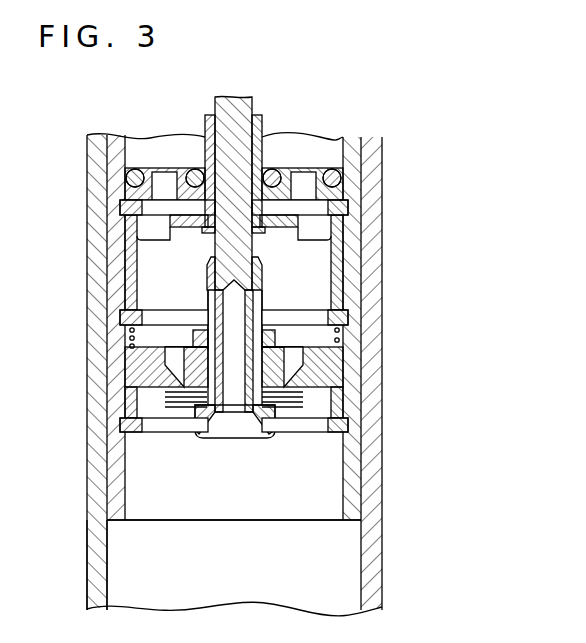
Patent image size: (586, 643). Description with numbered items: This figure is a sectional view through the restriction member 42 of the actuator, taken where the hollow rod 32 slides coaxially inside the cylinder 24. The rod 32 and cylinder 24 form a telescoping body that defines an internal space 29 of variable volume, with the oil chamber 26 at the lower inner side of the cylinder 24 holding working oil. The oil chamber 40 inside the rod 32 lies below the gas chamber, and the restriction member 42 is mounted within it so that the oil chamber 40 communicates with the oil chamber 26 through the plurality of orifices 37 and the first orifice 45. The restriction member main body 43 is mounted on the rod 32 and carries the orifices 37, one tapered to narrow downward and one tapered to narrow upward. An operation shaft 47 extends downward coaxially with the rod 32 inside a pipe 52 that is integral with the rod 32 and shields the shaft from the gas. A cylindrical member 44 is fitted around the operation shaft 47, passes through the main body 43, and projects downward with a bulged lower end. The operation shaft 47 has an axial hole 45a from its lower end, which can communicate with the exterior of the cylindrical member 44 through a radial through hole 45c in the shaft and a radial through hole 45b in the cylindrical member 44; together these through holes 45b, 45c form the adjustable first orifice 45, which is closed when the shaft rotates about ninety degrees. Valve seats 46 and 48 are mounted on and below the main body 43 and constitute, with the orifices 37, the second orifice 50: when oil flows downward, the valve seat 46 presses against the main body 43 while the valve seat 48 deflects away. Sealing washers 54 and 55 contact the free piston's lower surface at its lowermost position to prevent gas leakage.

The cylinder 24 is at (97, 558).
The oil chamber 26 is at (123, 585).
The internal space 29 is at (345, 560).
The hollow rod 32 is at (110, 373).
The orifices 37 is at (153, 425).
The oil chamber 40 is at (135, 145).
The restriction member 42 is at (322, 277).
The restriction member main body 43 is at (330, 371).
The cylindrical member 44 is at (256, 424).
The first orifice 45 is at (235, 373).
The axial hole 45a is at (210, 440).
The through hole 45b is at (272, 297).
The through hole 45c is at (212, 300).
The valve seat 46 is at (172, 345).
The operation shaft 47 is at (236, 115).
The valve seat 48 is at (172, 410).
The second orifice 50 is at (337, 300).
The pipe 52 is at (265, 122).
The sealing washer 54 is at (195, 168).
The sealing washer 55 is at (332, 166).